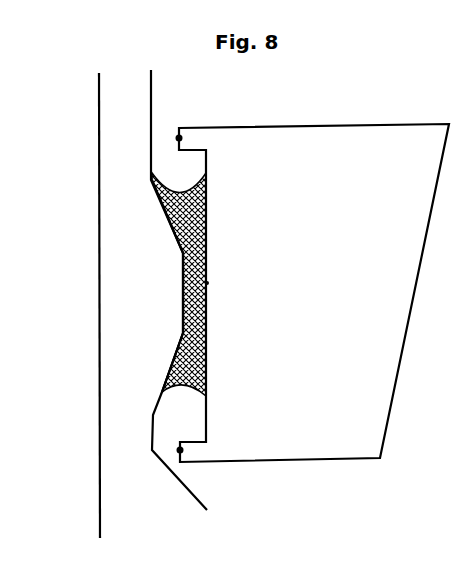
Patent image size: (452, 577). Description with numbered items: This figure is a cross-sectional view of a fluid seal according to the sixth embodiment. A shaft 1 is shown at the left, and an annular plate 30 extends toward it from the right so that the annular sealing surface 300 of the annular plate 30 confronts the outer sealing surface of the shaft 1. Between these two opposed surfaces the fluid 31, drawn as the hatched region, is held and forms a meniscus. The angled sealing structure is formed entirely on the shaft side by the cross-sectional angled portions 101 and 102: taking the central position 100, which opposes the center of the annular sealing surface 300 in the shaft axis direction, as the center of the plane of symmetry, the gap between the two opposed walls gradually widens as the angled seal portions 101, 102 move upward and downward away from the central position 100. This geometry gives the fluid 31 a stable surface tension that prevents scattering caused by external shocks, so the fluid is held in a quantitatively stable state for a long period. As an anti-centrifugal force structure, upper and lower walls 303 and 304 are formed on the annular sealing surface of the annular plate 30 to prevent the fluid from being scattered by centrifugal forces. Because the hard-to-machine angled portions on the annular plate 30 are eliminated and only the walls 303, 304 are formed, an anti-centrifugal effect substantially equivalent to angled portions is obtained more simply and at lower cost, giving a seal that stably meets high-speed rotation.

The shaft 1 is at (98, 128).
The annular plate 30 is at (382, 163).
The fluid 31 is at (183, 337).
The central position 100 is at (205, 283).
The angled seal portion 101 is at (172, 227).
The angled seal portion 102 is at (177, 357).
The annular sealing surface 300 is at (207, 283).
The wall 303 is at (179, 138).
The wall 304 is at (187, 457).